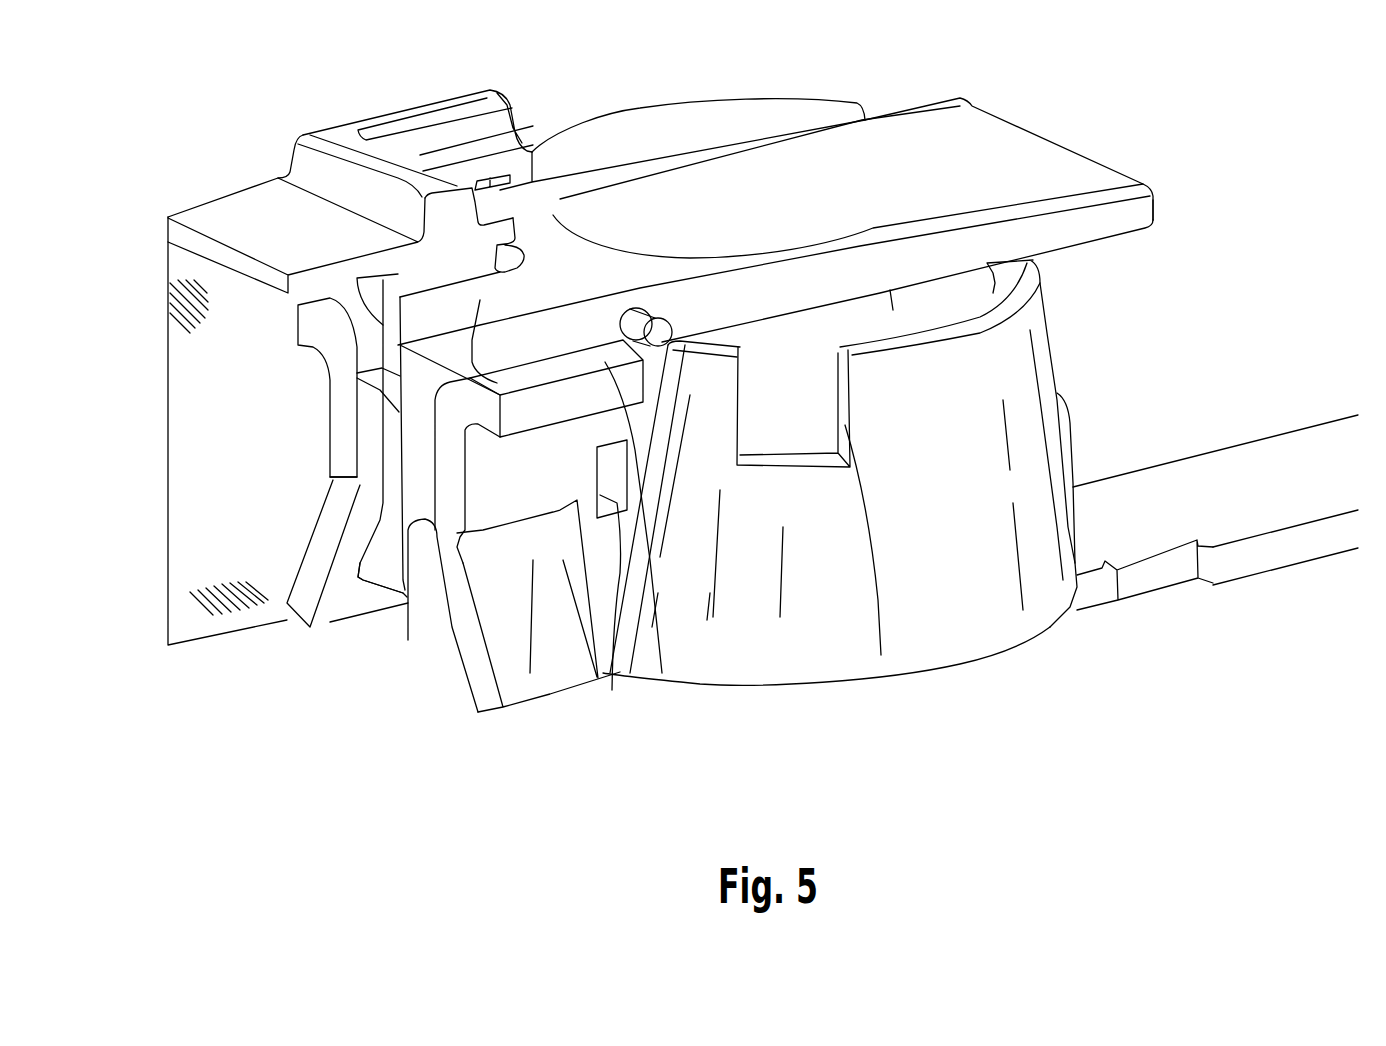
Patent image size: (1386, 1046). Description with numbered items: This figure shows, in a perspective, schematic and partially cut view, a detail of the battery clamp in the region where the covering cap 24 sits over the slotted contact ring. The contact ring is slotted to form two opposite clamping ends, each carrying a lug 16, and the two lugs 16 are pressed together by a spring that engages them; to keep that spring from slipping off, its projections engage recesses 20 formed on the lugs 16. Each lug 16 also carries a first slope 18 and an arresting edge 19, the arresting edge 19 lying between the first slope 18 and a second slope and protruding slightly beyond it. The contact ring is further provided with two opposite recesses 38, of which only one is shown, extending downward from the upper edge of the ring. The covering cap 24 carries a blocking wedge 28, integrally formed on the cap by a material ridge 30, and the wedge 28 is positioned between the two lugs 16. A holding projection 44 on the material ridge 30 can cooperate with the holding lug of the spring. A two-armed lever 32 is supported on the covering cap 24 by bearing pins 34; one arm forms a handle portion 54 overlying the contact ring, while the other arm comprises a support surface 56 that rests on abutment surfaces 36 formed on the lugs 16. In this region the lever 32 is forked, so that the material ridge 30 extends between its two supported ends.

The lug 16 is at (530, 673).
The first slope 18 is at (330, 603).
The arresting edge 19 is at (333, 473).
The recess 20 is at (612, 690).
The covering cap 24 is at (248, 207).
The blocking wedge 28 is at (385, 567).
The material ridge 30 is at (395, 437).
The two-armed lever 32 is at (947, 135).
The bearing pin 34 is at (657, 332).
The abutment surface 36 is at (497, 383).
The recess 38 is at (881, 655).
The holding projection 44 is at (398, 390).
The handle portion 54 is at (1098, 223).
The support surface 56 is at (662, 673).